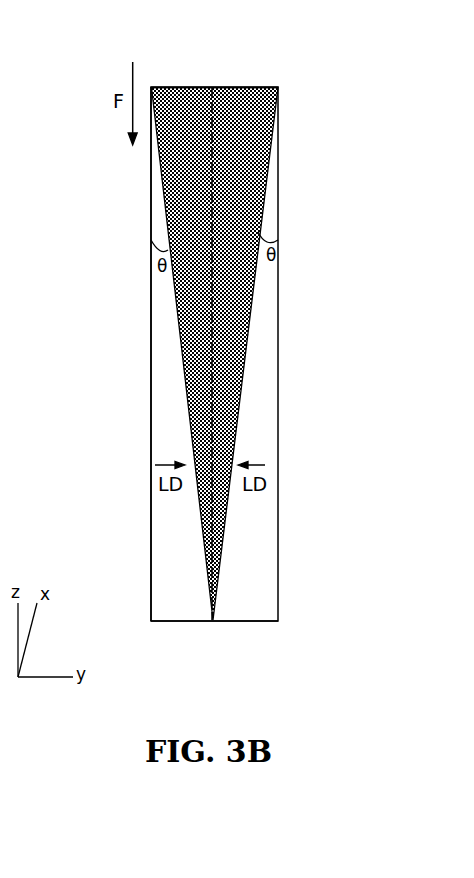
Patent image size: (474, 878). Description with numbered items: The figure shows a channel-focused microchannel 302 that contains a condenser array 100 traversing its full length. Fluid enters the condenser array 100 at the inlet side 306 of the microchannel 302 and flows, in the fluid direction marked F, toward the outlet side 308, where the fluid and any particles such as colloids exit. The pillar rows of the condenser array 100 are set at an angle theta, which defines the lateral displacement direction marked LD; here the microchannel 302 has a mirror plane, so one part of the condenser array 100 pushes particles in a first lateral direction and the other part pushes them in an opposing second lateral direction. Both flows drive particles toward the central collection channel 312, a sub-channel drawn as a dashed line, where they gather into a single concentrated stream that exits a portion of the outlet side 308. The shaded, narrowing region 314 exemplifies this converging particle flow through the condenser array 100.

The condenser array 100 is at (155, 359).
The microchannel 302 is at (155, 47).
The inlet side 306 is at (243, 70).
The outlet side 308 is at (188, 634).
The collection channel 312 is at (225, 179).
The region 314 is at (260, 131).